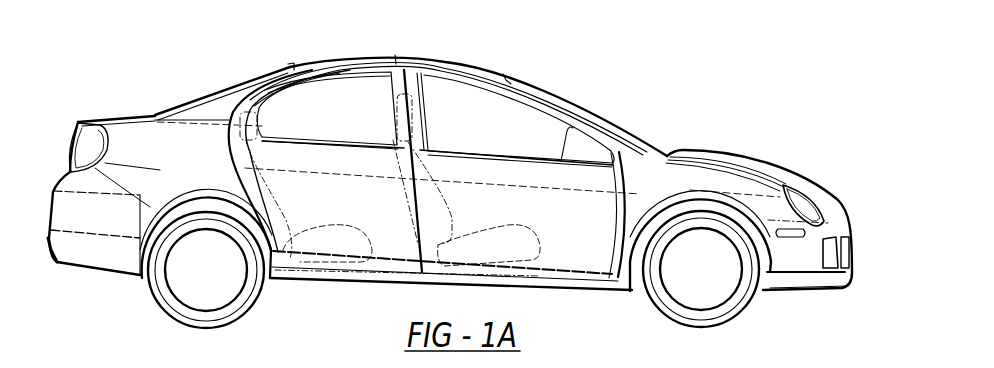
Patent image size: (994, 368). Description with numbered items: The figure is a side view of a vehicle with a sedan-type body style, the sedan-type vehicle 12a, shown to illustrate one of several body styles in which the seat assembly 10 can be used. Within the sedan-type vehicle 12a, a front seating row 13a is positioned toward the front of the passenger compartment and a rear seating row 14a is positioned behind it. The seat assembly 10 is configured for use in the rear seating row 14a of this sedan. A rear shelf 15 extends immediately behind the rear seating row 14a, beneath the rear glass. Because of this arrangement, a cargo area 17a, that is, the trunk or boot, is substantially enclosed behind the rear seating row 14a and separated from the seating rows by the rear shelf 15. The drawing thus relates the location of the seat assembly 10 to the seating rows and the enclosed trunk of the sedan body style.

The seat assembly 10 is at (278, 157).
The sedan-type vehicle 12a is at (656, 95).
The front seating row 13a is at (449, 168).
The rear seating row 14a is at (299, 188).
The rear shelf 15 is at (197, 117).
The cargo area 17a is at (185, 152).